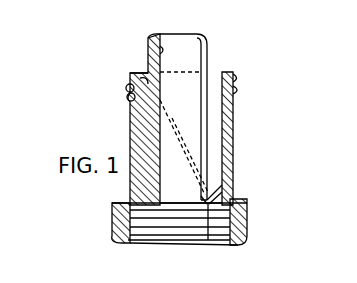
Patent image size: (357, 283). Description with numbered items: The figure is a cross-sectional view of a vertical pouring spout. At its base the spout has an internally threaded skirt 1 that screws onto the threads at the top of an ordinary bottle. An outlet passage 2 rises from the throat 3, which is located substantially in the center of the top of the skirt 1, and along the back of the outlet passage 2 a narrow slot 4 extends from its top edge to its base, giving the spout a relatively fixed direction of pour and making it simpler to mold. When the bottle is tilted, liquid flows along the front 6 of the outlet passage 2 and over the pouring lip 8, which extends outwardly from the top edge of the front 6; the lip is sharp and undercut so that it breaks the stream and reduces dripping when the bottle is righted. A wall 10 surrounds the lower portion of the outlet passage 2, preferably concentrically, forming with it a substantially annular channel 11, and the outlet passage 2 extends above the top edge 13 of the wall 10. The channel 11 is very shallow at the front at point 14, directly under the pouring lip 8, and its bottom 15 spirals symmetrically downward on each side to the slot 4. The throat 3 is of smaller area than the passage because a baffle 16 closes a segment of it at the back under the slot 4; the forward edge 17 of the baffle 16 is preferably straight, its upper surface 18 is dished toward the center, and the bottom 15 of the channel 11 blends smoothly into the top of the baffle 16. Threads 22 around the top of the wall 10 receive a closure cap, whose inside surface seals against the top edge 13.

The internally threaded skirt 1 is at (243, 214).
The outlet passage 2 is at (174, 46).
The throat 3 is at (188, 208).
The slot 4 is at (208, 56).
The front of the outlet passage 6 is at (152, 50).
The pouring lip 8 is at (148, 36).
The wall 10 is at (232, 120).
The annular channel 11 is at (142, 73).
The top edge of the wall 13 is at (230, 74).
The point 14 is at (127, 94).
The bottom of the channel 15 is at (184, 146).
The baffle 16 is at (215, 196).
The forward edge of the baffle 17 is at (194, 200).
The upper surface of the baffle 18 is at (226, 188).
The threads 22 is at (236, 92).